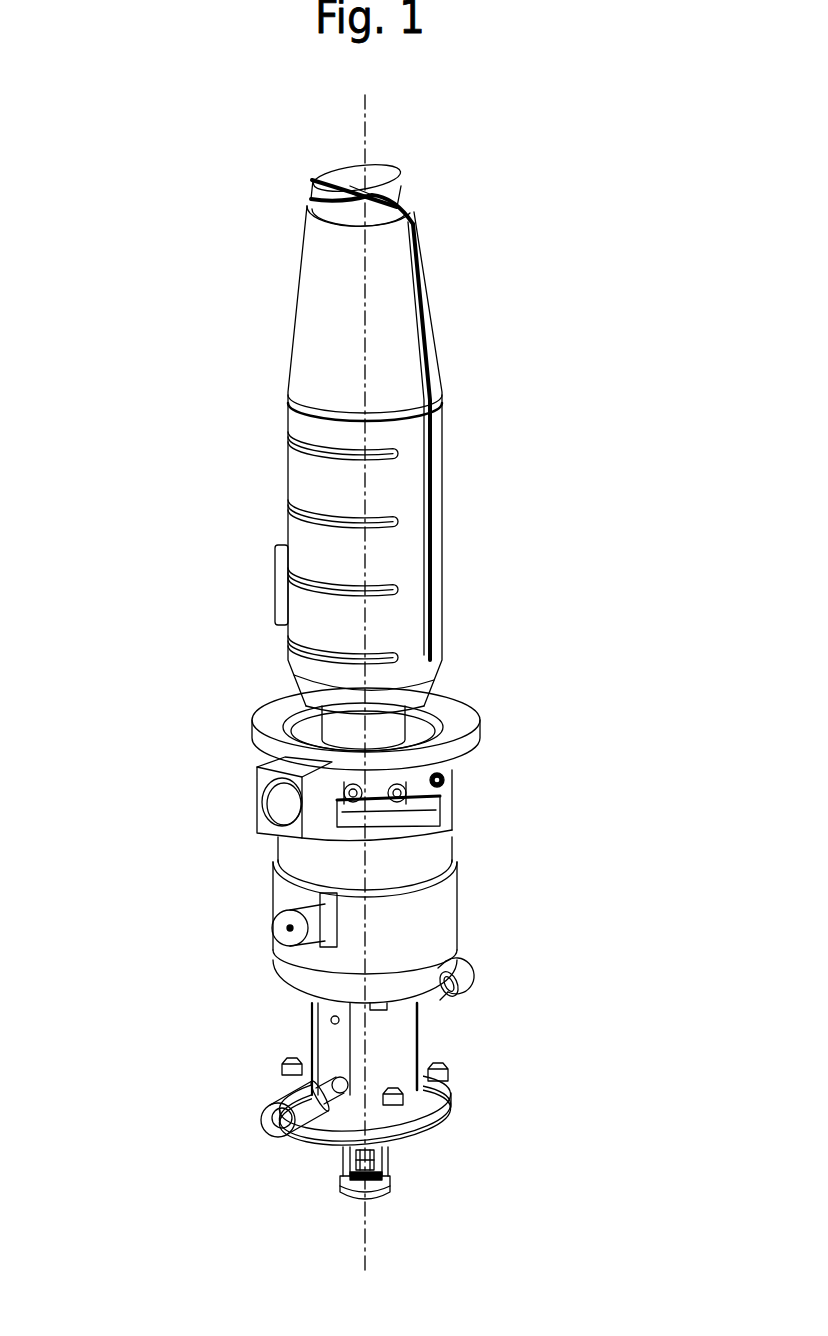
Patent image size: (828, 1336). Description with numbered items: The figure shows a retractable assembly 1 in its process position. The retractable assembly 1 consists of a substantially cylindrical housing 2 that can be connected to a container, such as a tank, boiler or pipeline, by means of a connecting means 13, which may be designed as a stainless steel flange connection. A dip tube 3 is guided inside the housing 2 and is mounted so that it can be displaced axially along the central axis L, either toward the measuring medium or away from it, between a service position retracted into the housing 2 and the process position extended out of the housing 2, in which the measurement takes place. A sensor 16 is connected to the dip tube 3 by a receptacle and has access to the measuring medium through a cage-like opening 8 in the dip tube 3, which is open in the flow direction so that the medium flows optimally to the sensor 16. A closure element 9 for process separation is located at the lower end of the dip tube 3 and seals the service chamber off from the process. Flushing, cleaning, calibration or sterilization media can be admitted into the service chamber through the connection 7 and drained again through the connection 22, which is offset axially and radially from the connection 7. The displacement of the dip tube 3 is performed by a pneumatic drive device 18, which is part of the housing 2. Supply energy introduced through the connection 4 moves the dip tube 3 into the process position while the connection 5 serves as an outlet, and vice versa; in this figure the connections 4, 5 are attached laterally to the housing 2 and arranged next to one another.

The retractable assembly 1 is at (128, 268).
The housing 2 is at (452, 887).
The dip tube 3 is at (330, 1163).
The connection 4 is at (450, 789).
The connection 5 is at (450, 817).
The connection 7 is at (245, 1117).
The opening 8 is at (345, 1180).
The closure element 9 is at (390, 1186).
The connecting means 13 is at (452, 1093).
The sensor 16 is at (388, 1167).
The drive device 18 is at (583, 868).
The connection 22 is at (490, 994).
The central axis L is at (384, 682).